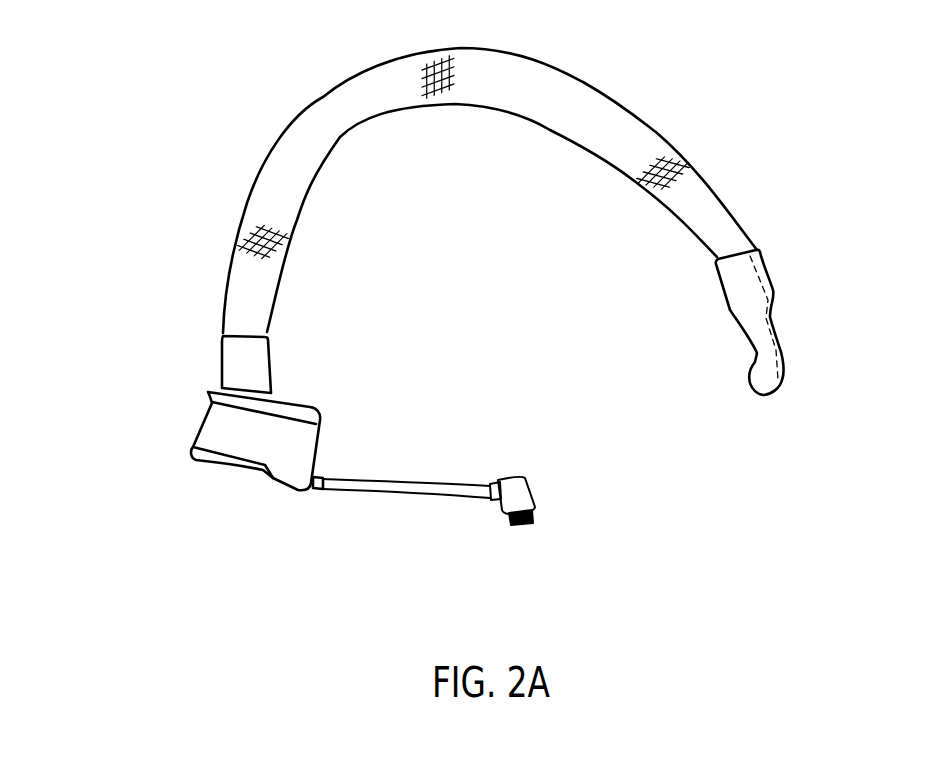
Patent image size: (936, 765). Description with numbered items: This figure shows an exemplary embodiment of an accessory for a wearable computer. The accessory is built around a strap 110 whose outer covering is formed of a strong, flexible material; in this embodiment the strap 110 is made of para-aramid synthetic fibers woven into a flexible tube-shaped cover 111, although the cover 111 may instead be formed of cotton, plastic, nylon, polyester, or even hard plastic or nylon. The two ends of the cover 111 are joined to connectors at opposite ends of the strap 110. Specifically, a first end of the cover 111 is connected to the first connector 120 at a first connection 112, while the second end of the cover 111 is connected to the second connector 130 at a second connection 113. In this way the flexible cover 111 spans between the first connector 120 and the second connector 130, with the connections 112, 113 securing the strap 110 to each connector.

The strap 110 is at (590, 74).
The cover 111 is at (657, 133).
The first connection 112 is at (740, 247).
The second connection 113 is at (228, 332).
The first connector 120 is at (807, 293).
The second connector 130 is at (338, 432).